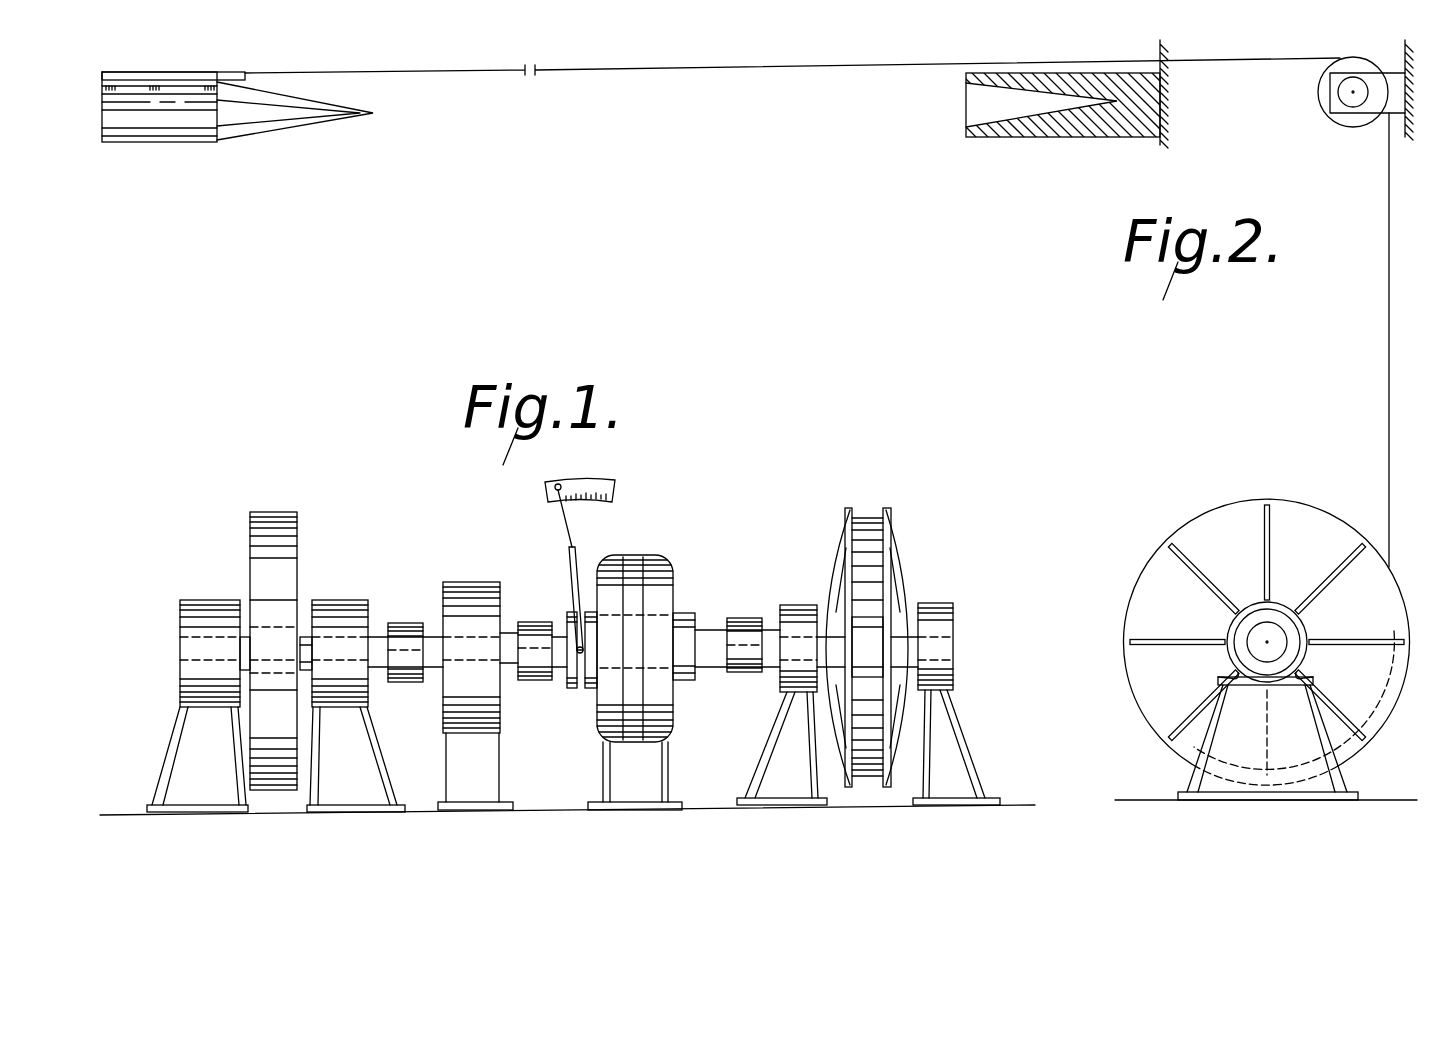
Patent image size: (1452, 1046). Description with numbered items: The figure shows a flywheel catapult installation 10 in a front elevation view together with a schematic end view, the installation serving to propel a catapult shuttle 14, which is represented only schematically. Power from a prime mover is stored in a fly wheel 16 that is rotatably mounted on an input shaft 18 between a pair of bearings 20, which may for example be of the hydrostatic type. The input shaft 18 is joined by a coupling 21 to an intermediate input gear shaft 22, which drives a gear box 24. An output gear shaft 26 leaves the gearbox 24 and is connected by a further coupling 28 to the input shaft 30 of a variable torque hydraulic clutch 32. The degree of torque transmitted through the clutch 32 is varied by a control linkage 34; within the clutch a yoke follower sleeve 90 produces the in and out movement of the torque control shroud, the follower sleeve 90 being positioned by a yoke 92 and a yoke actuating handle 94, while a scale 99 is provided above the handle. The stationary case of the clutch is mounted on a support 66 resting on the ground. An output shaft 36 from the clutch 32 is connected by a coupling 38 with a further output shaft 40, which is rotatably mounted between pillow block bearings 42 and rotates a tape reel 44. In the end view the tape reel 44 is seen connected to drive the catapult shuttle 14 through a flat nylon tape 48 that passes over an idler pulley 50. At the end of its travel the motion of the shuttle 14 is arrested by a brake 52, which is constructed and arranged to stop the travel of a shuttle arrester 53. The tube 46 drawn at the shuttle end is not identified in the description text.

In FIG. 2, the flywheel catapult installation 10 is at (1254, 624).
In FIG. 1, the flywheel catapult installation 10 is at (567, 631).
In FIG. 2, the catapult shuttle 14 is at (199, 129).
In FIG. 1, the fly wheel 16 is at (283, 527).
In FIG. 1, the input shaft 18 is at (303, 643).
In FIG. 1, the bearings 20 is at (217, 618).
In FIG. 1, the coupling 21 is at (403, 640).
In FIG. 1, the intermediate input gear shaft 22 is at (437, 667).
In FIG. 1, the gear box 24 is at (478, 603).
In FIG. 1, the output gear shaft 26 is at (507, 645).
In FIG. 1, the coupling 28 is at (538, 665).
In FIG. 1, the input shaft 30 is at (562, 667).
In FIG. 1, the variable torque hydraulic clutch 32 is at (639, 682).
In FIG. 1, the control linkage 34 is at (592, 538).
In FIG. 1, the output shaft 36 is at (712, 650).
In FIG. 1, the coupling 38 is at (738, 638).
In FIG. 1, the output shaft 40 is at (770, 652).
In FIG. 1, the pillow block bearings 42 is at (797, 625).
In FIG. 2, the tape reel 44 is at (1141, 560).
In FIG. 1, the tape reel 44 is at (866, 511).
In FIG. 2, the guide tube 46 is at (216, 62).
In FIG. 2, the flat nylon tape 48 is at (655, 69).
In FIG. 2, the idler pulley 50 is at (1340, 115).
In FIG. 2, the brake 52 is at (1003, 137).
In FIG. 2, the shuttle arrester 53 is at (287, 117).
In FIG. 1, the support 66 is at (603, 772).
In FIG. 1, the yoke follower sleeve 90 is at (566, 622).
In FIG. 1, the yoke 92 is at (585, 612).
In FIG. 1, the yoke actuating handle 94 is at (567, 587).
In FIG. 1, the scale 99 is at (545, 490).